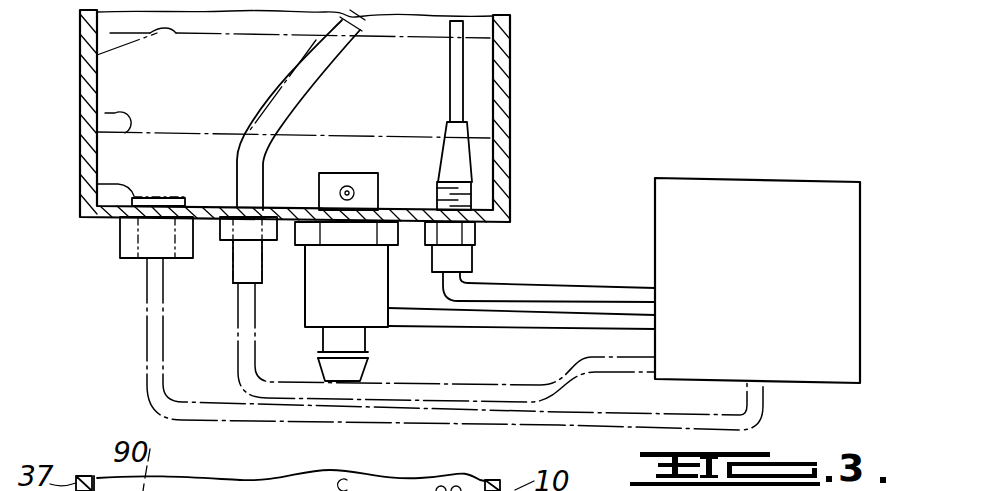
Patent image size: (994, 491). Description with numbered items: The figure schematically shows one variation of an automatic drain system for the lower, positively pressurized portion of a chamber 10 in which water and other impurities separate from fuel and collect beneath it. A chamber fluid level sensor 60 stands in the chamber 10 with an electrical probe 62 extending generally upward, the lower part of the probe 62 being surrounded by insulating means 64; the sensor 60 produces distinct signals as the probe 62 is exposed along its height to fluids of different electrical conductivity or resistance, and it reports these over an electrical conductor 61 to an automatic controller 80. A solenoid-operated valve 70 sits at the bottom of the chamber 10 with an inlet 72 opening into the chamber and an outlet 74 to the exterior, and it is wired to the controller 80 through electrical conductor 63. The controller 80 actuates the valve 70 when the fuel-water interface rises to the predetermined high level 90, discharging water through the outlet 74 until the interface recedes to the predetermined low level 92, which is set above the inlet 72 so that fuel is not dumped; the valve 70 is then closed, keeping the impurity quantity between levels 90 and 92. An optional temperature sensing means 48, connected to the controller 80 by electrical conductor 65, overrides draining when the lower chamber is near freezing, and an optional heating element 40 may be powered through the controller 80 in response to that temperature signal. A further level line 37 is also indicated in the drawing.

The chamber 10 is at (510, 32).
The upper liquid level line 37 is at (112, 22).
The heating element 40 is at (311, 95).
The temperature sensing means 48 is at (97, 184).
The chamber fluid level sensor 60 is at (498, 146).
The electrical conductor 61 is at (527, 290).
The electrical probe 62 is at (462, 62).
The electrical conductor 63 is at (498, 322).
The insulating means 64 is at (464, 157).
The electrical conductor 65 is at (147, 296).
The solenoid-operated valve 70 is at (318, 300).
The inlet 72 is at (340, 191).
The outlet 74 is at (357, 382).
The automatic controller 80 is at (732, 198).
The predetermined high interface level 90 is at (97, 55).
The predetermined low interface level 92 is at (105, 113).